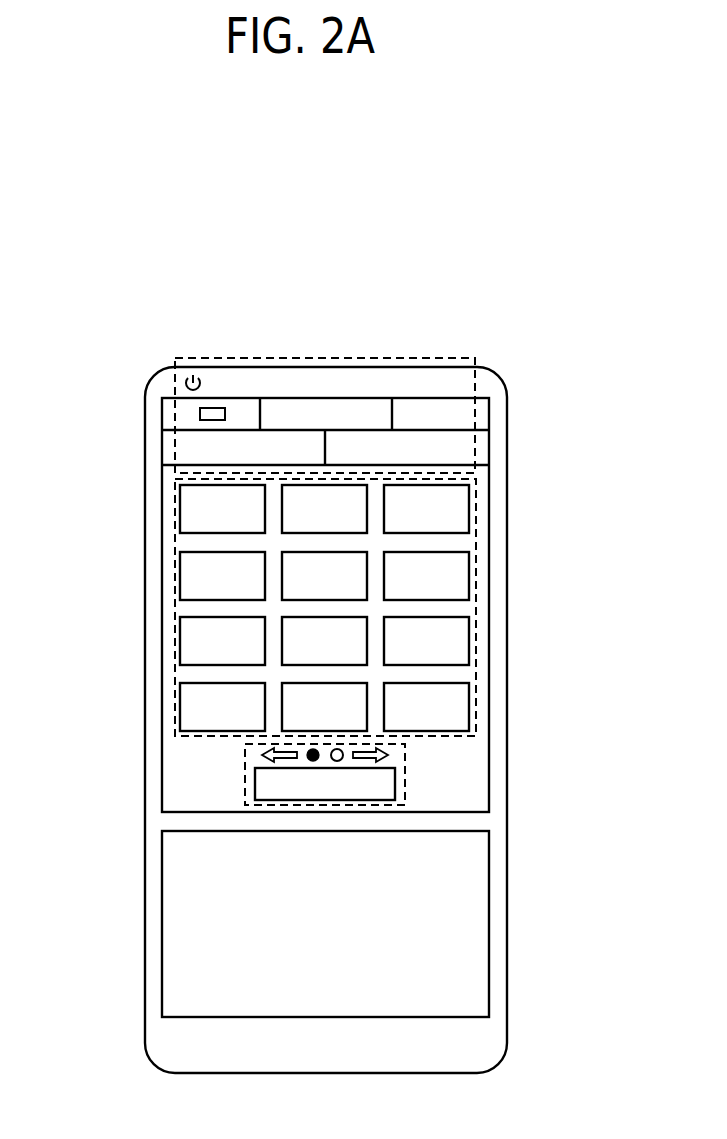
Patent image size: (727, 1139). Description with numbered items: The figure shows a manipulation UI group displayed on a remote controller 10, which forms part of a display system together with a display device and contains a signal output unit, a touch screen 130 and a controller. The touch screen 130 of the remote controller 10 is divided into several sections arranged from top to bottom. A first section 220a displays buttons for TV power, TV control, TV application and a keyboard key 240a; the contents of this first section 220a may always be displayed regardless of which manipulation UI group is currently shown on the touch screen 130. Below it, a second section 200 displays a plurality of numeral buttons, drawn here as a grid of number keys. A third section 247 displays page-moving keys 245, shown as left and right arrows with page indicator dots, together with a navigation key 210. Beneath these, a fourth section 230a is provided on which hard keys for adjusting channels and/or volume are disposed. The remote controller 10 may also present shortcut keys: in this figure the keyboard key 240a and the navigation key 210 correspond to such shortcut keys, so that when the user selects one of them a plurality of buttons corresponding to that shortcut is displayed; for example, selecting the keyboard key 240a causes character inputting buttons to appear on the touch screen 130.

The remote controller 10 is at (268, 362).
The touch screen 130 is at (162, 678).
The first section 220a is at (175, 418).
The keyboard key 240a is at (358, 397).
The second section 200 is at (175, 608).
The third section 247 is at (407, 772).
The page-moving keys 245 is at (262, 755).
The navigation key 210 is at (255, 784).
The fourth section 230a is at (167, 948).